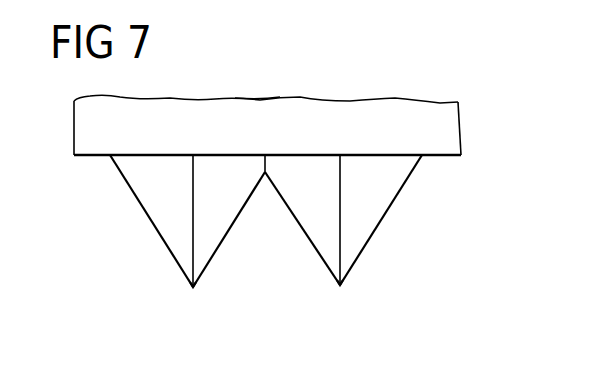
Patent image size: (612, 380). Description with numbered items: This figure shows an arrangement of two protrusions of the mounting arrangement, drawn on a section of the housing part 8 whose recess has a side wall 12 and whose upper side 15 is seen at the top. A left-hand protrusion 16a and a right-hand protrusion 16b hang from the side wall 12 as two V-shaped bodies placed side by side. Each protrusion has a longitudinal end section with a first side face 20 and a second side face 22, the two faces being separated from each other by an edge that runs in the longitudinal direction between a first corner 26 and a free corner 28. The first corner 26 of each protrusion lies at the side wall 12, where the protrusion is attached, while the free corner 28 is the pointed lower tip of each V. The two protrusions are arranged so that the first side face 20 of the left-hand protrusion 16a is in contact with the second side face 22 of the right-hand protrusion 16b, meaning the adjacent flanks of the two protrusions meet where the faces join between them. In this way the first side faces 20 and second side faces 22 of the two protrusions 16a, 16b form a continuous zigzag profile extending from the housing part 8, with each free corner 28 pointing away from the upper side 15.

The housing part 8 is at (413, 115).
The side wall 12 is at (440, 157).
The upper side 15 is at (279, 130).
The left-hand protrusion 16a is at (128, 239).
The right-hand protrusion 16b is at (400, 239).
The first side face 20 is at (142, 180).
The second side face 22 is at (223, 202).
The first corner 26 is at (193, 155).
The free corner 28 is at (192, 288).